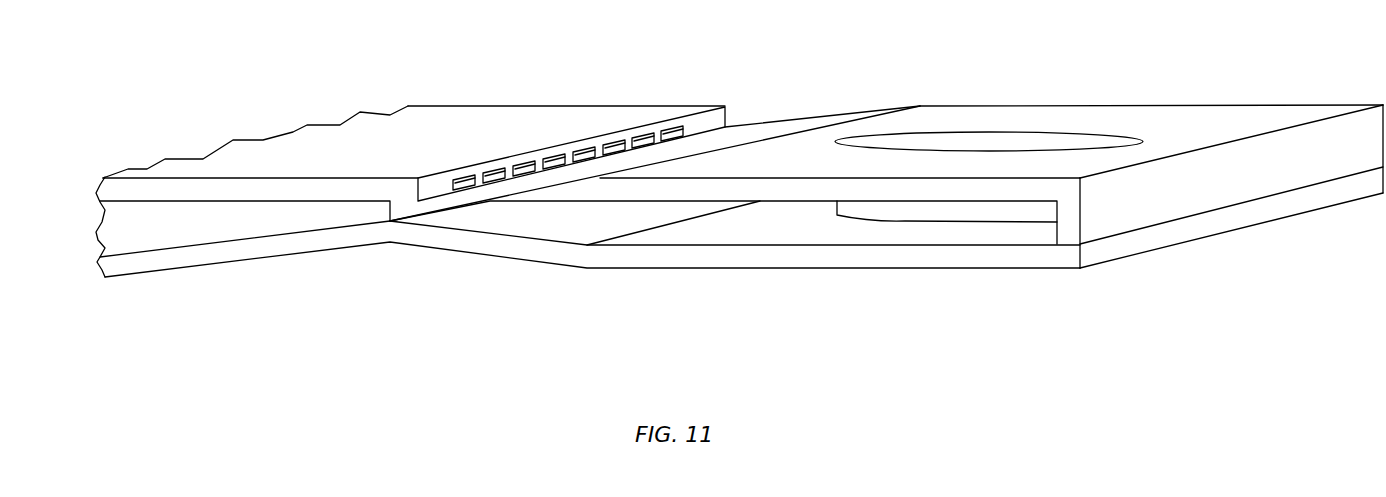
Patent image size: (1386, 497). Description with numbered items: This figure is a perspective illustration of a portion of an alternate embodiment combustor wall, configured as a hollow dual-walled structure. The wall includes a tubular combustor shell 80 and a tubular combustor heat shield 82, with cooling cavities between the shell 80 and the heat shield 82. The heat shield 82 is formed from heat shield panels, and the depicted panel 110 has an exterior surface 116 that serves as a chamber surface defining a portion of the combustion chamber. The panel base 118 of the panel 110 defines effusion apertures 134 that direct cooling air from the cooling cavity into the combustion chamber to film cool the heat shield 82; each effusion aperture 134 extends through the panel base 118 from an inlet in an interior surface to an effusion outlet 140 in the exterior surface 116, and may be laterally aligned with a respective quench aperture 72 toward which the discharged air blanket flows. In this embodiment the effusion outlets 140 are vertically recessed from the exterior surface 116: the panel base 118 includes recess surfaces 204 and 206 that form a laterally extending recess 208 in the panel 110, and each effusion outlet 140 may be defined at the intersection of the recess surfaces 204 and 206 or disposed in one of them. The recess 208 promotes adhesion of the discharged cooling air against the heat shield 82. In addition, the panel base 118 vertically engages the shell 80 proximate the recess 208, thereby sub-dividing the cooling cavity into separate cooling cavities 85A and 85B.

The quench aperture 72 is at (995, 145).
The combustor shell 80 is at (103, 278).
The combustor heat shield 82 is at (202, 193).
The cooling cavity 85A is at (200, 267).
The cooling cavity 85B is at (703, 268).
The heat shield panel 110 is at (123, 169).
The exterior surface 116 is at (457, 117).
The panel base 118 is at (295, 131).
The effusion aperture 134 is at (618, 143).
The effusion outlet 140 is at (645, 140).
The recess surface 204 is at (722, 118).
The recess surface 206 is at (778, 136).
The recess 208 is at (830, 100).